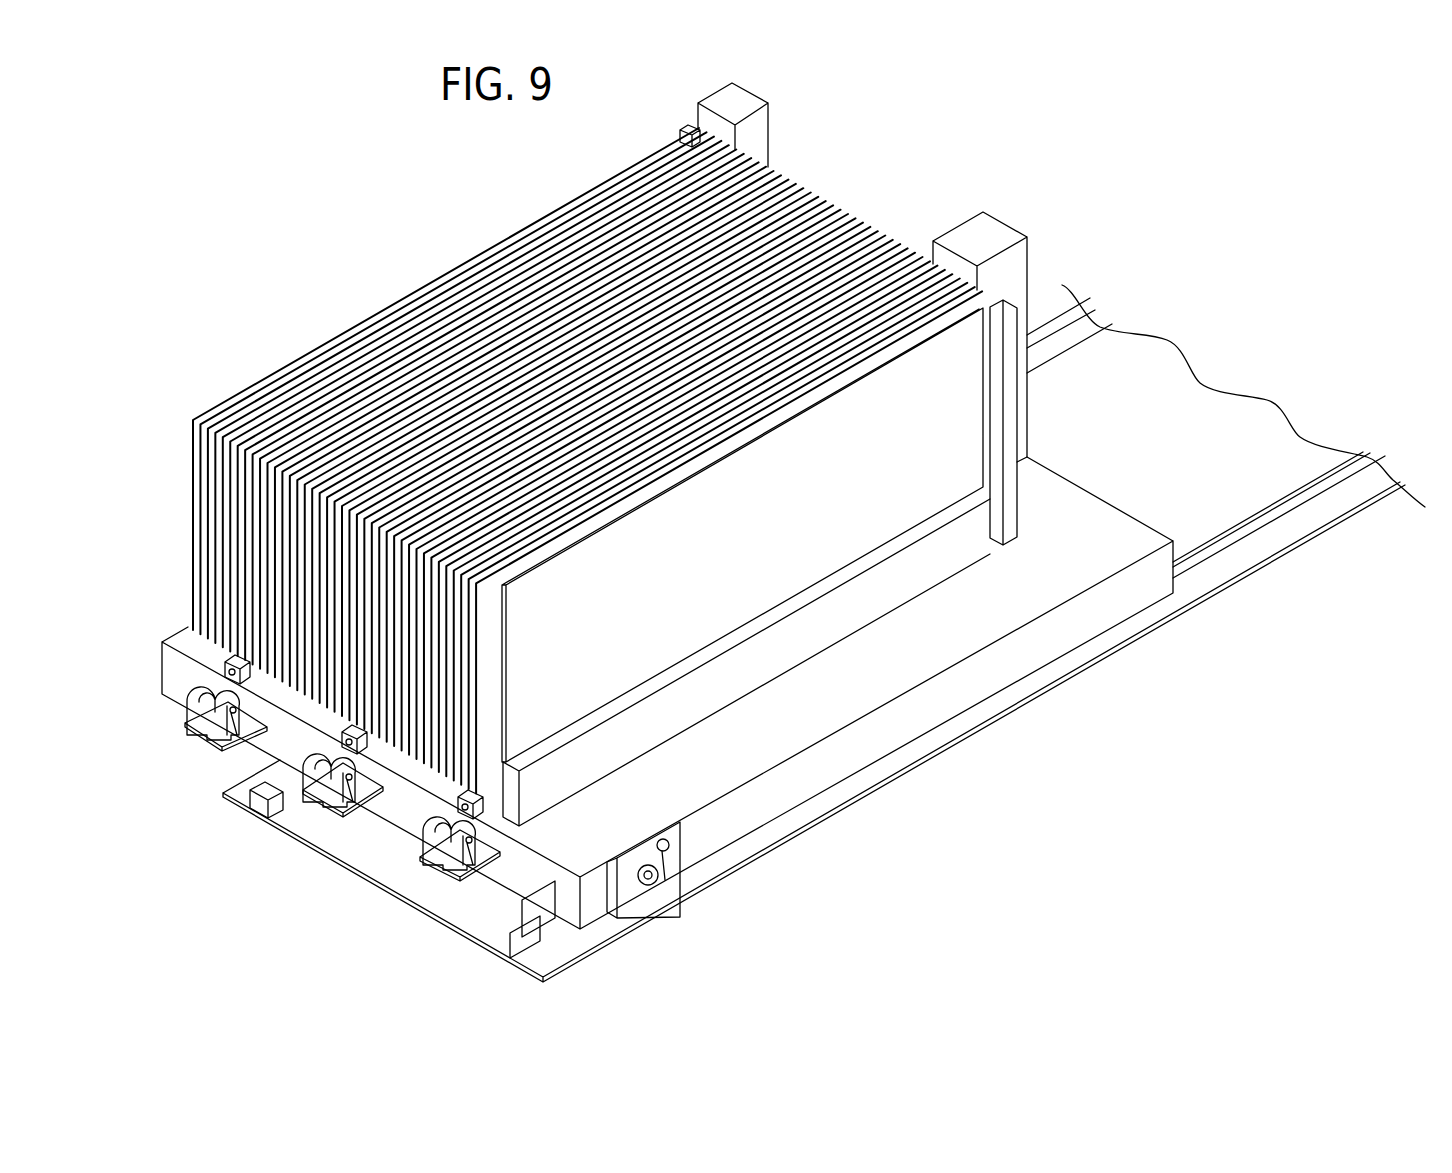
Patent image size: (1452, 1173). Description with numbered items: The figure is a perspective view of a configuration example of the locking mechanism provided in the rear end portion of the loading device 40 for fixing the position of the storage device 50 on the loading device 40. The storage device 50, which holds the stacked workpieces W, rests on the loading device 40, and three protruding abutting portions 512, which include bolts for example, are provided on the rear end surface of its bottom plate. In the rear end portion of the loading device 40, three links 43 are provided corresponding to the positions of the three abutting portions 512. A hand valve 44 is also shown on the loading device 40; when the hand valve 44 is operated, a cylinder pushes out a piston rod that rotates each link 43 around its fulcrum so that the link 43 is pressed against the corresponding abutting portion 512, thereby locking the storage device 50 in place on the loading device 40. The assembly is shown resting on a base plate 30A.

The workpieces (stacked plates) W is at (523, 308).
The storage device 50 is at (958, 554).
The loading device 40 is at (893, 687).
The base plate 30A is at (622, 918).
The hand valve 44 is at (680, 877).
The link 43 is at (183, 705).
The abutting portion 512 is at (213, 708).